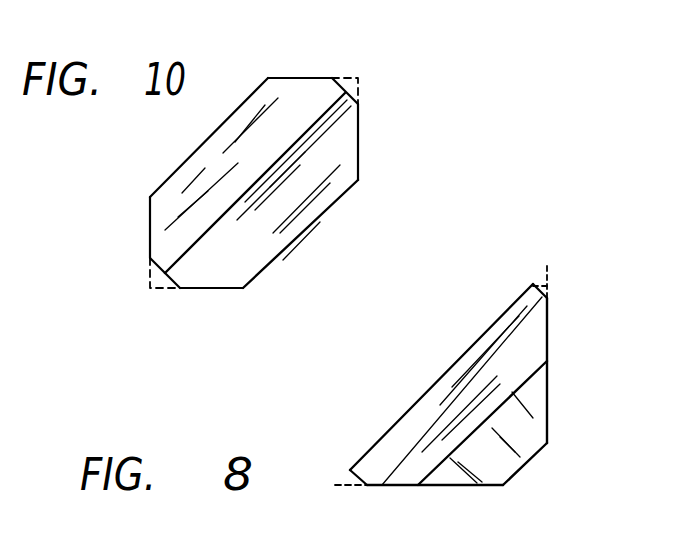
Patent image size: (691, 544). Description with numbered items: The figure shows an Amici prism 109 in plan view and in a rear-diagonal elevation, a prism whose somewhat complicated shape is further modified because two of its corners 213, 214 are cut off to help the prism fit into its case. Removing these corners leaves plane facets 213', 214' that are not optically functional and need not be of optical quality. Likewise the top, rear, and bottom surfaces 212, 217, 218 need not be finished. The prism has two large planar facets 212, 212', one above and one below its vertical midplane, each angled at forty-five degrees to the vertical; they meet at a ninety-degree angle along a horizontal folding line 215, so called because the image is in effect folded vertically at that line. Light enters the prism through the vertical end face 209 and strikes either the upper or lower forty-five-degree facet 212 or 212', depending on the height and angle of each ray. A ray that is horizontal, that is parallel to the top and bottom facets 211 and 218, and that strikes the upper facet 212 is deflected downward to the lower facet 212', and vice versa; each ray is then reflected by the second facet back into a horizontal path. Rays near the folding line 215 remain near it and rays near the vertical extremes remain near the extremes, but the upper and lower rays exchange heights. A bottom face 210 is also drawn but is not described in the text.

In FIG. 10, the Amici prism 109 is at (268, 285).
In FIG. 8, the Amici prism 109 is at (565, 417).
In FIG. 8, the vertical end face 209 is at (548, 365).
In FIG. 8, the bottom face of prism 210 is at (461, 487).
In FIG. 10, the top facet 211 is at (303, 234).
In FIG. 8, the top facet 211 is at (512, 473).
In FIG. 10, the upper forty-five-degree facet 212 is at (356, 212).
In FIG. 8, the upper forty-five-degree facet 212 is at (432, 391).
In FIG. 10, the lower forty-five-degree facet 212' is at (190, 164).
In FIG. 10, the corner 213 is at (391, 70).
In FIG. 8, the corner 213 is at (576, 257).
In FIG. 10, the plane facet 213' is at (397, 98).
In FIG. 8, the plane facet 213' is at (592, 282).
In FIG. 10, the corner 214 is at (113, 277).
In FIG. 8, the corner 214 is at (315, 509).
In FIG. 10, the plane facet 214' is at (152, 300).
In FIG. 8, the plane facet 214' is at (319, 452).
In FIG. 10, the folding line 215 is at (303, 133).
In FIG. 8, the folding line 215 is at (459, 357).
In FIG. 8, the rear surface 217 is at (540, 451).
In FIG. 10, the bottom surface 218 is at (243, 102).